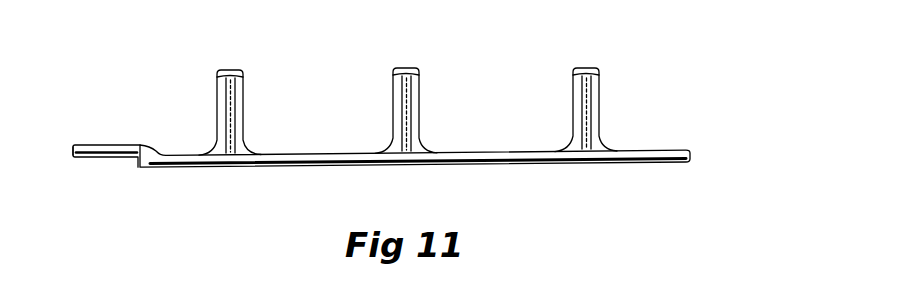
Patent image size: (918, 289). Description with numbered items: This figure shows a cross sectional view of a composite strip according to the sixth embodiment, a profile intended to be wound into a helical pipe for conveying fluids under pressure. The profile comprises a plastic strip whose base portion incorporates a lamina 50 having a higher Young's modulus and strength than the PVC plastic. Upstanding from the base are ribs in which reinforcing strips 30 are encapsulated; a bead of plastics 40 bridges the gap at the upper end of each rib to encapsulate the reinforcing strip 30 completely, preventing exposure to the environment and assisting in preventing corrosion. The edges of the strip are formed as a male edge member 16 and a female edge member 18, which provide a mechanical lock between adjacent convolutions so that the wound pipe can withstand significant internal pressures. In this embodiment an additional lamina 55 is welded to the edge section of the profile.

The male edge member 16 is at (664, 116).
The female edge member 18 is at (107, 146).
The reinforcing strip 30 is at (240, 100).
The bead of plastics 40 is at (585, 68).
The lamina 50 is at (563, 161).
The additional lamina 55 is at (107, 158).